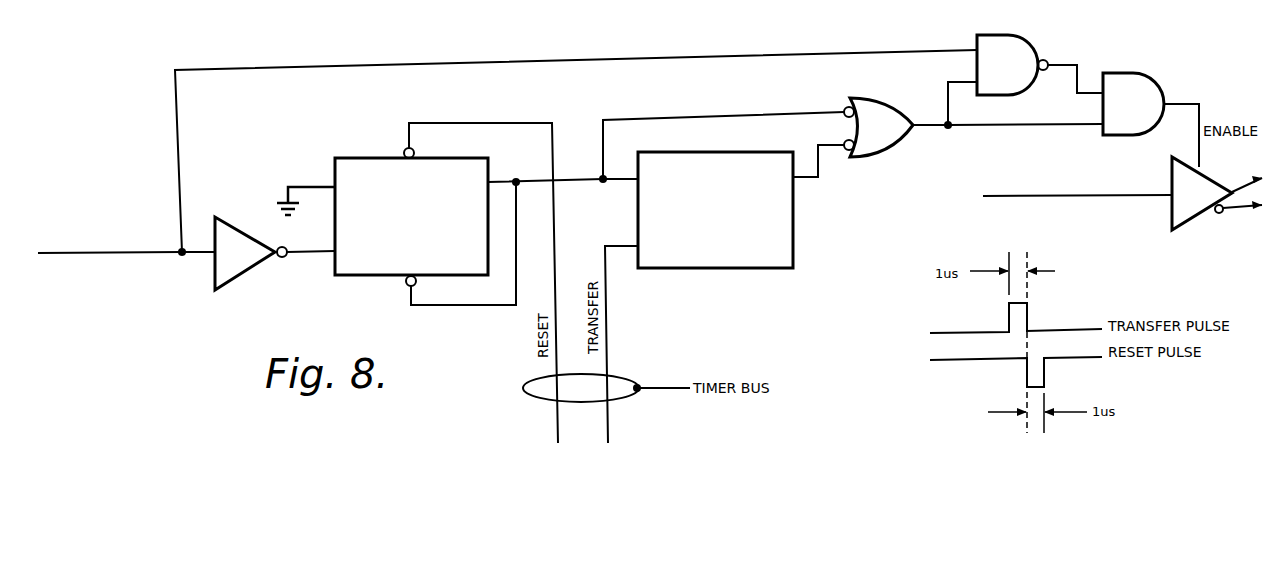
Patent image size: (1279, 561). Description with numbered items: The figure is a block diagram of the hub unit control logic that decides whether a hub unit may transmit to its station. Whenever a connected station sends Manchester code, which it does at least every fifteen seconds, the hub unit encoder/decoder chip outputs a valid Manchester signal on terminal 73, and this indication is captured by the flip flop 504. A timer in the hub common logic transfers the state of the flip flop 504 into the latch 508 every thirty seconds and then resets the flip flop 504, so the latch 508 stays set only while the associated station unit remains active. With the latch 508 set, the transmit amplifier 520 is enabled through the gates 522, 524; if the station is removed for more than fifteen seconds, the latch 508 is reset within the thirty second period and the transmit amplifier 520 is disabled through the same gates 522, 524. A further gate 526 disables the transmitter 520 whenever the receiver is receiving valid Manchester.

The terminal 73 is at (150, 250).
The flip flop 504 is at (367, 277).
The latch 508 is at (793, 232).
The gate 522 is at (888, 156).
The gate 526 is at (1002, 96).
The gate 524 is at (1103, 134).
The transmit amplifier 520 is at (1172, 217).